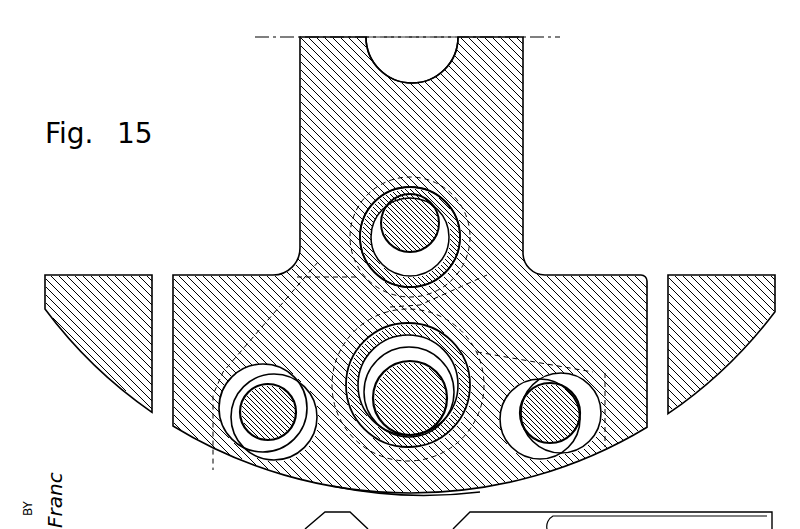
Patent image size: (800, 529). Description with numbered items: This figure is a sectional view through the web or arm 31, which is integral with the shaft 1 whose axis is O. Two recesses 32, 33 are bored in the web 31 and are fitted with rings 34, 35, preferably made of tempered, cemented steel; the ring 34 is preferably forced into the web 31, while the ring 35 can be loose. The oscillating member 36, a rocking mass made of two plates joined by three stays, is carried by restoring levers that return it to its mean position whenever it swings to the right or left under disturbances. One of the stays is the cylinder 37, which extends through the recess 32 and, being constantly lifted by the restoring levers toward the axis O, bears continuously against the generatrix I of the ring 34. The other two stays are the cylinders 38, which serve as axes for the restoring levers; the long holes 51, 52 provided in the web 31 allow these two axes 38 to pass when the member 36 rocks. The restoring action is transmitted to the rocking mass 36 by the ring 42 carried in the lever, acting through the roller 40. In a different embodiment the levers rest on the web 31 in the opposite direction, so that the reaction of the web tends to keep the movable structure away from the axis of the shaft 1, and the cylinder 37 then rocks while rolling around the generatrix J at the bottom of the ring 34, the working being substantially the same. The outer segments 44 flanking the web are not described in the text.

The web 31 is at (473, 148).
The arcuate side segments 44 is at (100, 346).
The oscillating member 36 is at (270, 276).
The ring 34 is at (440, 200).
The recess 32 is at (438, 250).
The cylinder 37 is at (382, 223).
The generatrix I is at (383, 183).
The generatrix J is at (410, 273).
The axis O is at (413, 38).
The shaft 1 is at (392, 63).
The ring 35 is at (445, 335).
The roller 40 is at (372, 424).
The recess 33 is at (445, 408).
The ring 42 is at (352, 474).
The long hole 51 is at (227, 397).
The cylinder 38 is at (268, 417).
The long hole 52 is at (545, 462).